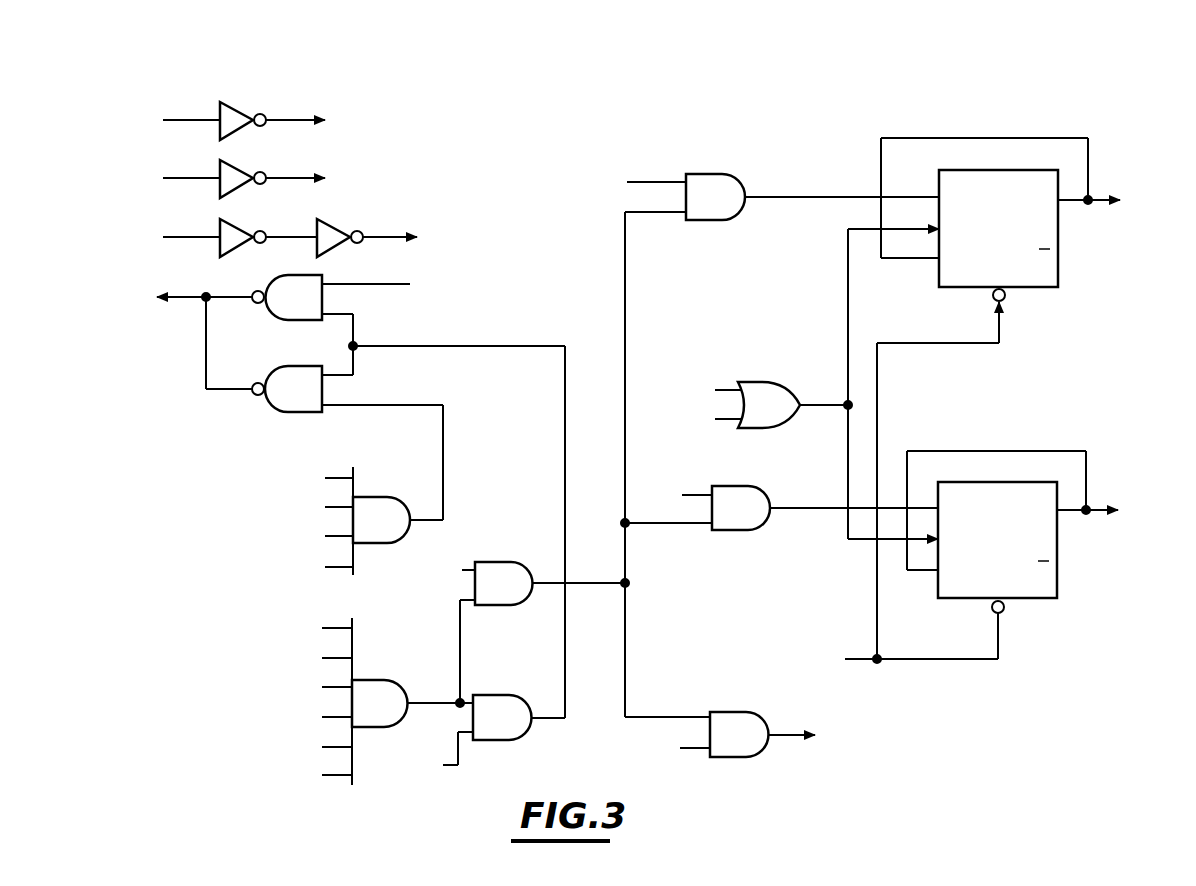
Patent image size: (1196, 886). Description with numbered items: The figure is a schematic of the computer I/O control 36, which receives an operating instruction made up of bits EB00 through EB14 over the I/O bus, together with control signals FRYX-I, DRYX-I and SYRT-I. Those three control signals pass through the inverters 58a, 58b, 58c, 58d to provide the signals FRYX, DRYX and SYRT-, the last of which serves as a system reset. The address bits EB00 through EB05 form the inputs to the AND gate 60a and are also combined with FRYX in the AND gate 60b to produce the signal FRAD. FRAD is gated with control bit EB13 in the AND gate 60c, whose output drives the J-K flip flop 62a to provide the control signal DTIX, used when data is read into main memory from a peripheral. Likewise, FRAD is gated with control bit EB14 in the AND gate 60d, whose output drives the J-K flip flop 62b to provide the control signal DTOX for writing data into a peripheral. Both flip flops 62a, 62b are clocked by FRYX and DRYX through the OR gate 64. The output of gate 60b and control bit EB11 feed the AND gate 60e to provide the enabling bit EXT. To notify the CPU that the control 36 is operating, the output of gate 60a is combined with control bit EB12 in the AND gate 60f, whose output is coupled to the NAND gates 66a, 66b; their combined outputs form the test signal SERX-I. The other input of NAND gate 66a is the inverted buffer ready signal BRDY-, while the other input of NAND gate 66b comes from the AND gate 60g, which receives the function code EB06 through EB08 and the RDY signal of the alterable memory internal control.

The inverter 58a is at (243, 114).
The inverter 58b is at (243, 172).
The inverter 58c is at (243, 231).
The inverter 58d is at (340, 231).
The NAND gate 66a is at (309, 309).
The NAND gate 66b is at (309, 401).
The AND gate 60a is at (395, 715).
The AND gate 60b is at (518, 595).
The AND gate 60c is at (729, 209).
The AND gate 60d is at (755, 520).
The AND gate 60e is at (753, 746).
The AND gate 60f is at (514, 730).
The AND gate 60g is at (396, 532).
The OR gate 64 is at (778, 417).
The J-K flip flop 62a is at (1021, 170).
The J-K flip-flop 62b is at (1033, 598).
The computer I/O control 36 is at (827, 128).